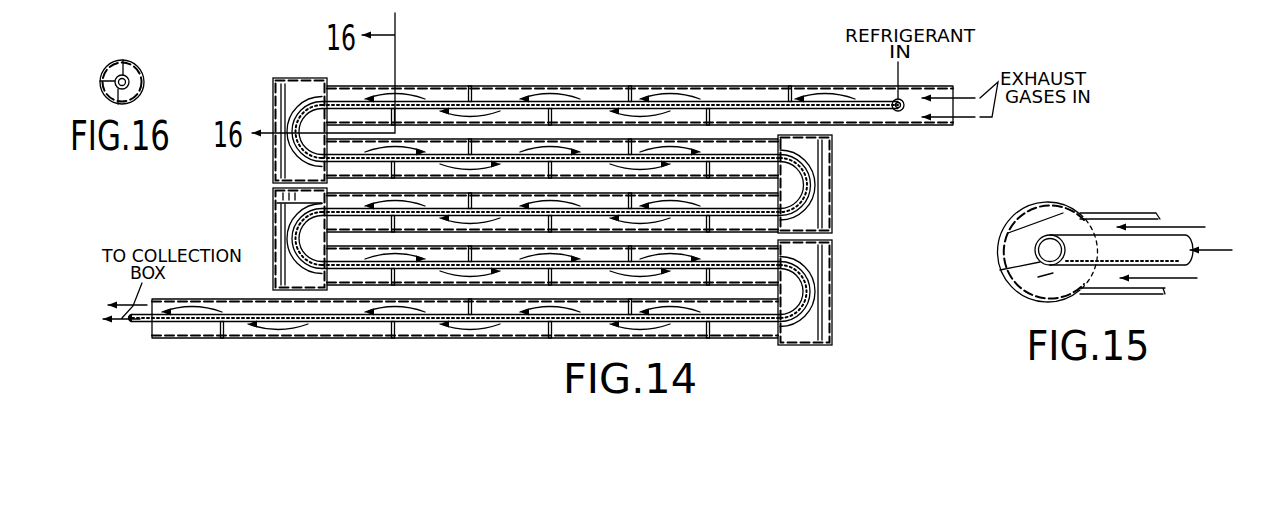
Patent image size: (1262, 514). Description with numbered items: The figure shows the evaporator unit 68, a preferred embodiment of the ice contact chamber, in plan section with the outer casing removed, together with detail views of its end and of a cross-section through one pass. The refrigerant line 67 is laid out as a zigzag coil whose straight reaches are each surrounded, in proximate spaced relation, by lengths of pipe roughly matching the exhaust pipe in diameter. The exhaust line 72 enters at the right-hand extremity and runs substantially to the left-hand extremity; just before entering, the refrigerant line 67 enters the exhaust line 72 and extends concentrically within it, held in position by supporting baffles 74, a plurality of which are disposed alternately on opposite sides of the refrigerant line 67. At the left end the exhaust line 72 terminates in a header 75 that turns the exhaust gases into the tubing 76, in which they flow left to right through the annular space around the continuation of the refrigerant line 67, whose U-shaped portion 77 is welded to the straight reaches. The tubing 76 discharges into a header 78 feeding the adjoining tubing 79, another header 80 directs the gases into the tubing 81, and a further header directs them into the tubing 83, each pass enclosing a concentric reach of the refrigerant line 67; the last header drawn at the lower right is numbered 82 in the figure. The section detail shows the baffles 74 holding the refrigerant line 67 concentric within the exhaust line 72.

In FIG. 14, the refrigerant line 67 is at (867, 113).
In FIG. 16, the refrigerant line 67 is at (113, 77).
In FIG. 15, the refrigerant line 67 is at (1038, 262).
In FIG. 14, the exhaust line 72 is at (923, 128).
In FIG. 16, the exhaust line 72 is at (145, 84).
In FIG. 15, the exhaust line 72 is at (1145, 213).
In FIG. 14, the supporting baffles 74 is at (706, 121).
In FIG. 16, the supporting baffles 74 is at (128, 70).
In FIG. 14, the header 75 is at (274, 100).
In FIG. 15, the header 75 is at (1000, 236).
In FIG. 14, the tubing 76 is at (737, 139).
In FIG. 14, the U-shaped portion 77 is at (292, 143).
In FIG. 14, the header 78 is at (832, 223).
In FIG. 14, the tubing 79 is at (276, 204).
In FIG. 14, the header 80 is at (273, 248).
In FIG. 14, the tubing 81 is at (740, 286).
In FIG. 14, the lower right return bend housing 82 is at (832, 322).
In FIG. 14, the tubing 83 is at (212, 341).
In FIG. 14, the evaporator unit 68 is at (672, 0).